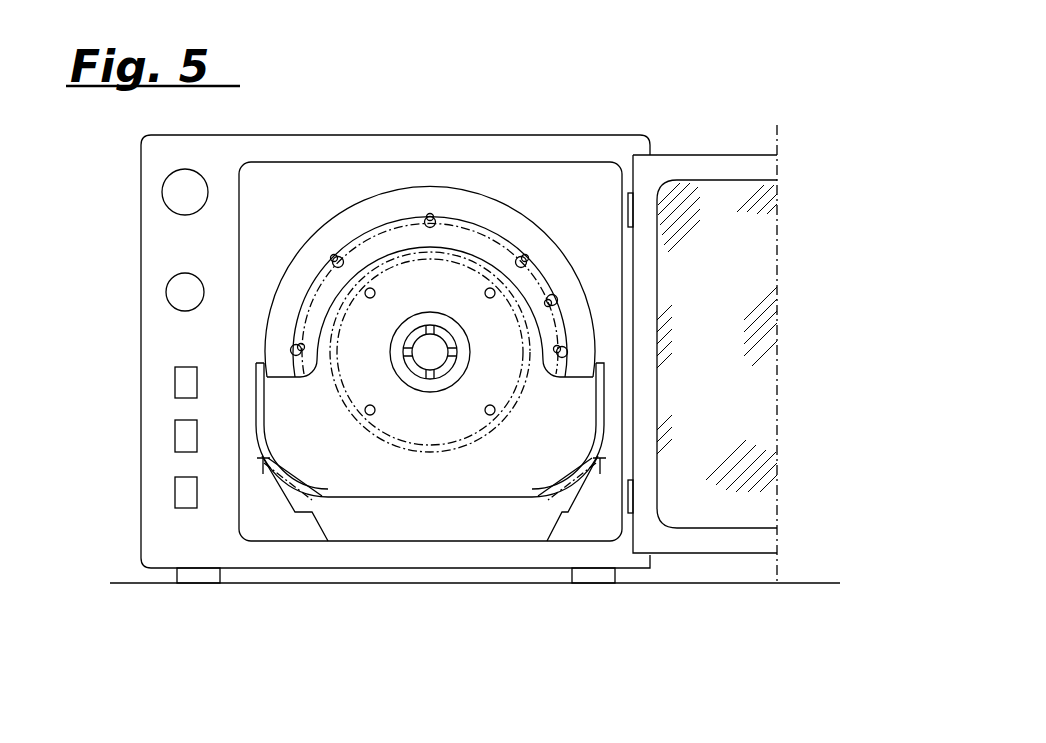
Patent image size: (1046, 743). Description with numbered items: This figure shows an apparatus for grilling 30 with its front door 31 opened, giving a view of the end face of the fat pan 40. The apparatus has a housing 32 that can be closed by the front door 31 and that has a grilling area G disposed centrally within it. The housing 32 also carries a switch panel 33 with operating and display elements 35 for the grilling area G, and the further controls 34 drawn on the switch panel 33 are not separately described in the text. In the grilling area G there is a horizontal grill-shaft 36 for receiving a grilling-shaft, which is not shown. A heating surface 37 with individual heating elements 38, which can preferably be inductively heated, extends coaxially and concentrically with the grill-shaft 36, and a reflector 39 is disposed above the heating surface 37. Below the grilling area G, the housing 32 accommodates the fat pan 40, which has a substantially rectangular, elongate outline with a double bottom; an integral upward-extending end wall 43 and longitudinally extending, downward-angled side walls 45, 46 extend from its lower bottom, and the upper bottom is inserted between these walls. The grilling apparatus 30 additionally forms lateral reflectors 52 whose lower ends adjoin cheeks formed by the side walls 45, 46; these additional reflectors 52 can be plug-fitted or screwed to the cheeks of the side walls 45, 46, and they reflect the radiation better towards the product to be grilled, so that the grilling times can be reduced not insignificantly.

The apparatus for grilling 30 is at (485, 137).
The front door 31 is at (750, 165).
The housing 32 is at (378, 148).
The switch panel 33 is at (157, 328).
The knobs 34 is at (178, 196).
The operating and display elements 35 is at (187, 383).
The grill-shaft 36 is at (430, 355).
The heating surface 37 is at (350, 248).
The heating elements 38 is at (503, 246).
The reflector 39 is at (553, 240).
The fat pan 40 is at (512, 540).
The end wall 43 is at (343, 525).
The side wall 45 is at (283, 497).
The side wall 46 is at (580, 497).
The lateral reflectors 52 is at (262, 458).
The grilling area G is at (436, 424).